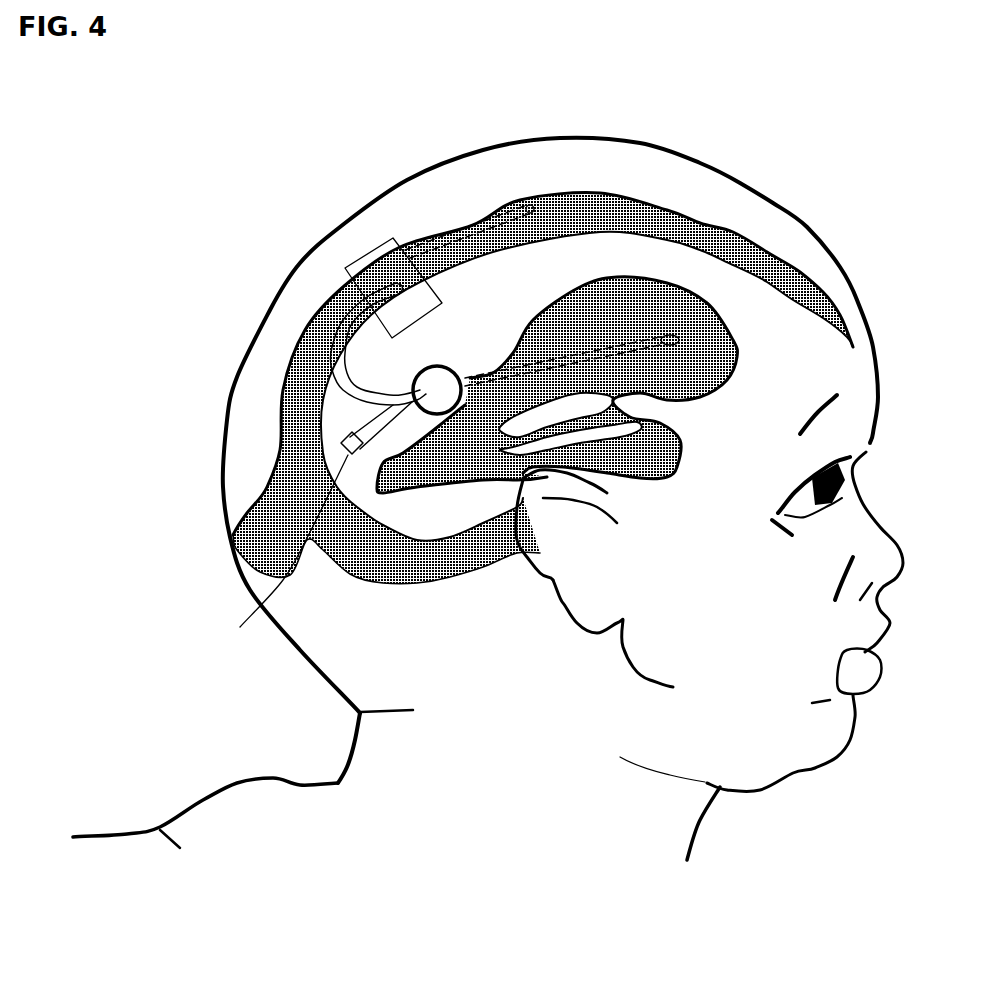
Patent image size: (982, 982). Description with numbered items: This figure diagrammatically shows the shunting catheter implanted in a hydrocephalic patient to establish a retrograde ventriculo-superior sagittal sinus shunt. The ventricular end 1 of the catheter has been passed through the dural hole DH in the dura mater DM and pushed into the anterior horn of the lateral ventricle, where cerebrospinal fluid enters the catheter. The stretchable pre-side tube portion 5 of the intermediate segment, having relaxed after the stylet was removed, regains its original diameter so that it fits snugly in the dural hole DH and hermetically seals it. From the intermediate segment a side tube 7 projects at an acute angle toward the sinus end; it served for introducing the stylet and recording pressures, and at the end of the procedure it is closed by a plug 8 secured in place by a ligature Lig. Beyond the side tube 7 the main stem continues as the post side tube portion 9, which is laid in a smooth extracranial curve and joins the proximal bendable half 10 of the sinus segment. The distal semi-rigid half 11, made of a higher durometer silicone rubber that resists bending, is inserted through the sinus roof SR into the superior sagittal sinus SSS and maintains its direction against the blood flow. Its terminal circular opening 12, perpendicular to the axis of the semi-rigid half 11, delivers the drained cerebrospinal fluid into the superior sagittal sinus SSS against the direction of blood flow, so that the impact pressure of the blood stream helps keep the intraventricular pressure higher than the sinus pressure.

The ventricular end of the shunting catheter 1 is at (690, 342).
The pre-side tube portion of the intermediate segment 5 is at (397, 388).
The side tube 7 is at (280, 549).
The plug 8 is at (343, 447).
The post side tube portion of the intermediate segment 9 is at (320, 378).
The proximal bendable half of the sinus segment 10 is at (436, 268).
The distal semi-rigid half of the sinus segment 11 is at (484, 226).
The terminal circular opening of the sinus segment 12 is at (534, 203).
The sinus roof SR is at (357, 262).
The dura mater DM is at (387, 262).
The dural hole DH is at (455, 377).
The superior sagittal sinus SSS is at (633, 207).
The ligature Lig is at (230, 547).